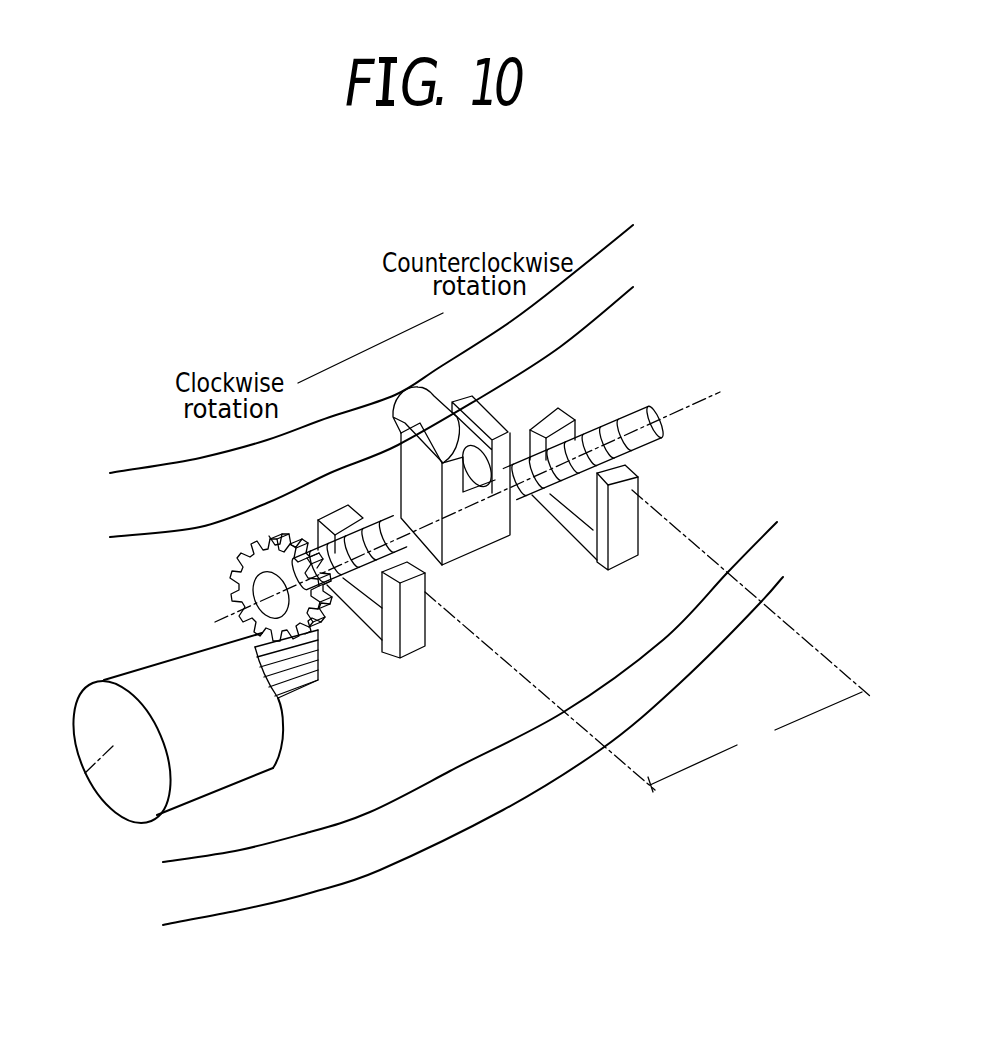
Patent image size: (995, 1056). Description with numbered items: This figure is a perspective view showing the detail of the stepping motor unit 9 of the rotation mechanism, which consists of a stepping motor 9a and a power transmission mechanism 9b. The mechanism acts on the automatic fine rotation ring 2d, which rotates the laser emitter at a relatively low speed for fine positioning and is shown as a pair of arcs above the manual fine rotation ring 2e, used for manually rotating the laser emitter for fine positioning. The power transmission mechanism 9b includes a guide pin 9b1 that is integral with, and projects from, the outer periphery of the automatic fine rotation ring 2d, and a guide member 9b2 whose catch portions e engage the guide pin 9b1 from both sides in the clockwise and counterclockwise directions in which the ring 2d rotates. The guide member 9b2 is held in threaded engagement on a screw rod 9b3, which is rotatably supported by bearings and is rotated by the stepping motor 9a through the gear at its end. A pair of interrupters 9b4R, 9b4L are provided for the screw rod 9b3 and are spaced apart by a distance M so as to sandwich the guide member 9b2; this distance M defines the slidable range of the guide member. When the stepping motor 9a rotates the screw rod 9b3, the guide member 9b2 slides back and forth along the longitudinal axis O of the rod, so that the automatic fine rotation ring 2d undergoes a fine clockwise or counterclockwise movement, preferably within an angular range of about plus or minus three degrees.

The automatic fine rotation ring 2d is at (580, 310).
The manual fine rotation ring 2e is at (488, 792).
The stepping motor unit 9 is at (323, 775).
The stepping motor 9a is at (83, 775).
The power transmission mechanism 9b is at (614, 400).
The guide pin 9b1 is at (413, 398).
The guide member 9b2 is at (475, 533).
The screw rod 9b3 is at (660, 444).
The interrupter 9b4L is at (407, 635).
The interrupter 9b4R is at (617, 542).
The catch portion e is at (402, 433).
The longitudinal axis of the screw rod O is at (670, 413).
The distance between the interrupters M is at (647, 641).